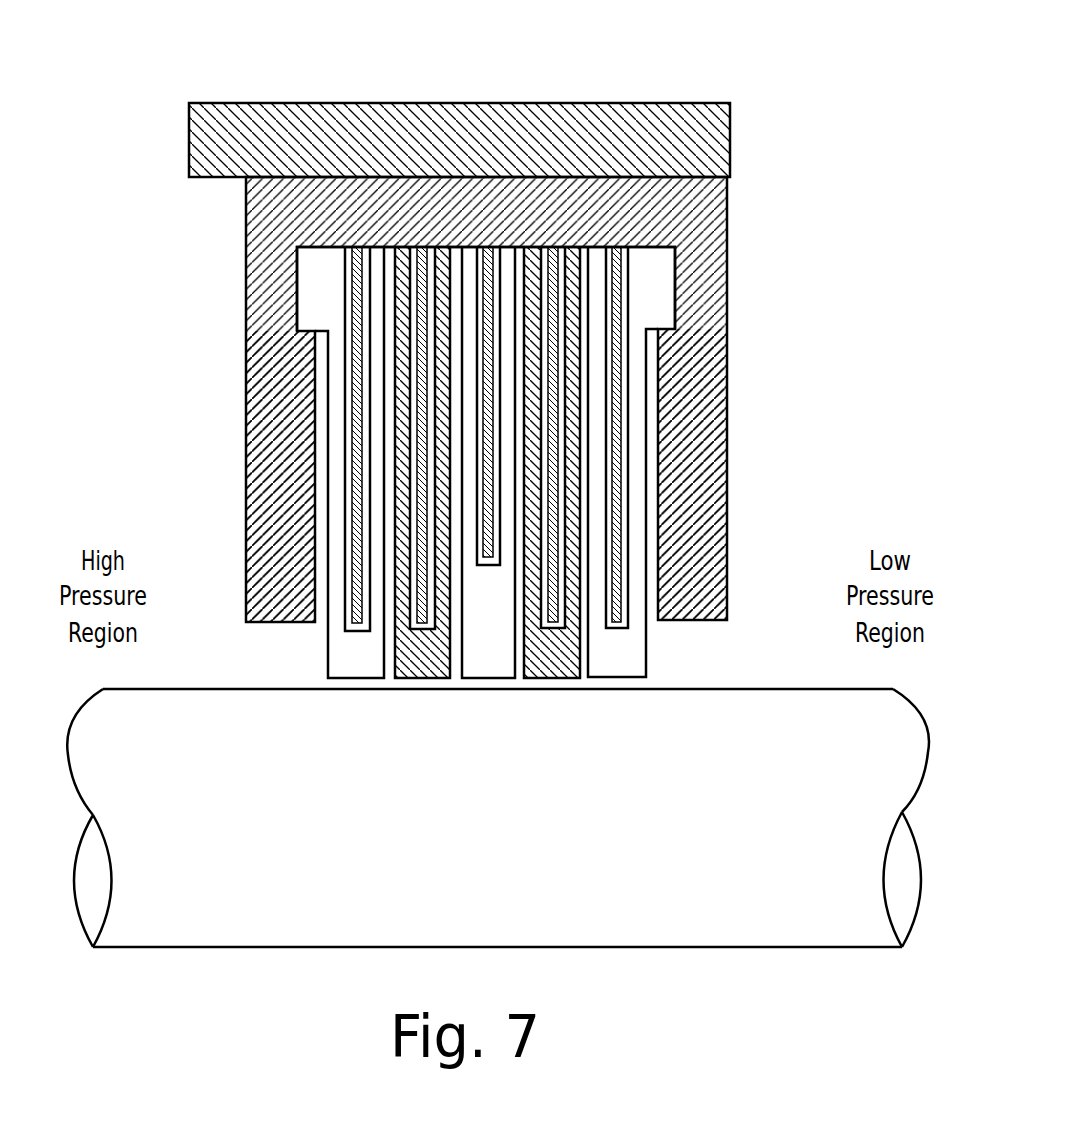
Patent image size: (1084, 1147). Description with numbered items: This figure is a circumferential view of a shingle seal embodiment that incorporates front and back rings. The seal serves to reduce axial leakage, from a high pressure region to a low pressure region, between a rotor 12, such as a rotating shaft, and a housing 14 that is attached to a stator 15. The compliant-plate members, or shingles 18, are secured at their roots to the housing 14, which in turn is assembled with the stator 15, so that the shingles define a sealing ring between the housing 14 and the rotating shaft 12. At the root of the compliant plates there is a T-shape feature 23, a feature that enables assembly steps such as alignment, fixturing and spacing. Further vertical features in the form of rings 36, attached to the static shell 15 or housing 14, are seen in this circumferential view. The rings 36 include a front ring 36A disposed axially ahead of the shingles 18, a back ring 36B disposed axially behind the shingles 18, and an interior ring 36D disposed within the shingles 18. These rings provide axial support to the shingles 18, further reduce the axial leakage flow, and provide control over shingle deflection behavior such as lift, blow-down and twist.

The rotor 12 is at (517, 764).
The housing 14 is at (674, 222).
The stator 15 is at (632, 124).
The shingles 18 is at (428, 668).
The T-shape feature 23 is at (320, 300).
The rings 36 is at (529, 469).
The front ring 36A is at (287, 405).
The back ring 36B is at (707, 482).
The interior ring 36D is at (557, 604).